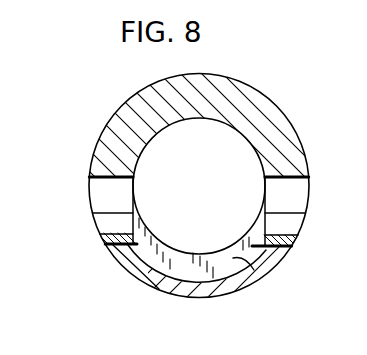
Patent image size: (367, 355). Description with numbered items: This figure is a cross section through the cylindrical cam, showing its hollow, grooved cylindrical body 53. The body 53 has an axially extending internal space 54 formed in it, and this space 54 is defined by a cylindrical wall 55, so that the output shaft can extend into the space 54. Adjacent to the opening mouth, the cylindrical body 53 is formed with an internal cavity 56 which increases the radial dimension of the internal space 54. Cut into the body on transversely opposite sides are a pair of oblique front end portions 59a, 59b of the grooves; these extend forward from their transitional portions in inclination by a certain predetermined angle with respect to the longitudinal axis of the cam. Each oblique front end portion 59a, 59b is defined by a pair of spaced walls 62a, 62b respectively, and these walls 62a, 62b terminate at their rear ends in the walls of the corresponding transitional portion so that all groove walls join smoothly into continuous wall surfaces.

The cylindrical body 53 is at (267, 99).
The internal space 54 is at (229, 151).
The cylindrical wall 55 is at (142, 115).
The internal cavity 56 is at (260, 280).
The oblique front end portion 59a is at (292, 203).
The oblique front end portion 59b is at (101, 204).
The spaced walls 62a is at (289, 179).
The spaced walls 62b is at (102, 181).